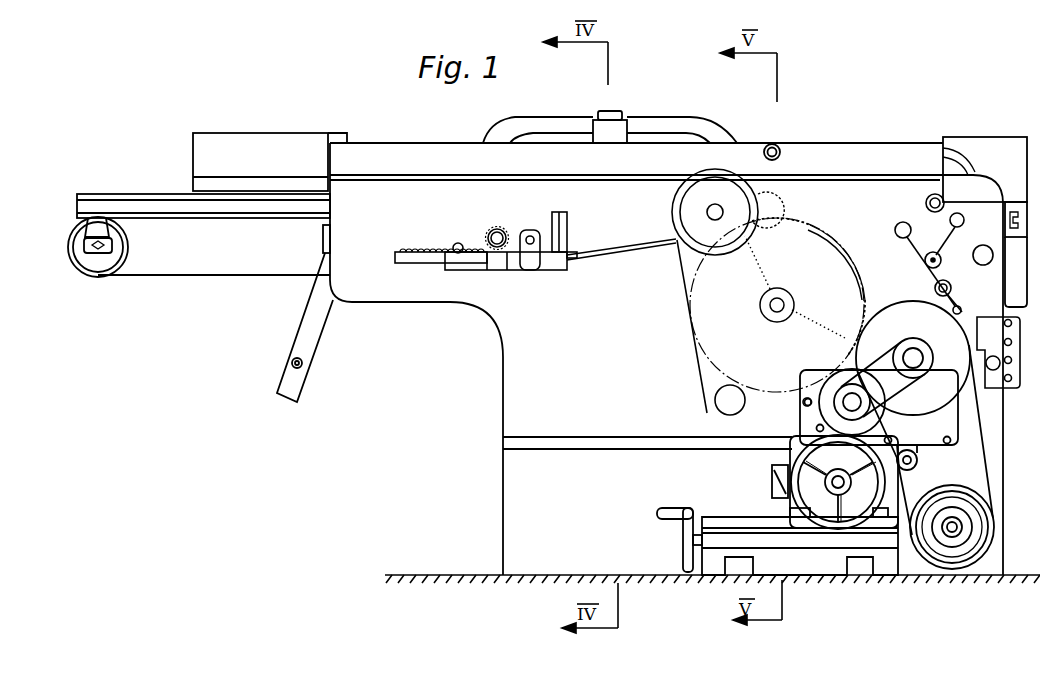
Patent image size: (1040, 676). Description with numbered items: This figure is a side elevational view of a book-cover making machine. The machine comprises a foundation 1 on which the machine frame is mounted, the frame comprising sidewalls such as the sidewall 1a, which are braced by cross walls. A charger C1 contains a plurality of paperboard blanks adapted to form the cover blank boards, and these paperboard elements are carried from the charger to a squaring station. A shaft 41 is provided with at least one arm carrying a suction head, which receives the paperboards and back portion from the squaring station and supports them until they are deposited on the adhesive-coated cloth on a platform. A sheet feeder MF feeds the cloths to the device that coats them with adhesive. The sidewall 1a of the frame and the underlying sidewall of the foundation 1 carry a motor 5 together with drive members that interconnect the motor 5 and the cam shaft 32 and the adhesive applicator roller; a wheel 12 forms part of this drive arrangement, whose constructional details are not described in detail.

The foundation 1 is at (518, 500).
The sidewall 1a is at (518, 390).
The charger C1 is at (238, 142).
The shaft 41 is at (610, 108).
The sheet feeder MF is at (988, 145).
The cam shaft 32 is at (784, 305).
The drive pulley wheel 12 is at (897, 315).
The motor 5 is at (808, 485).